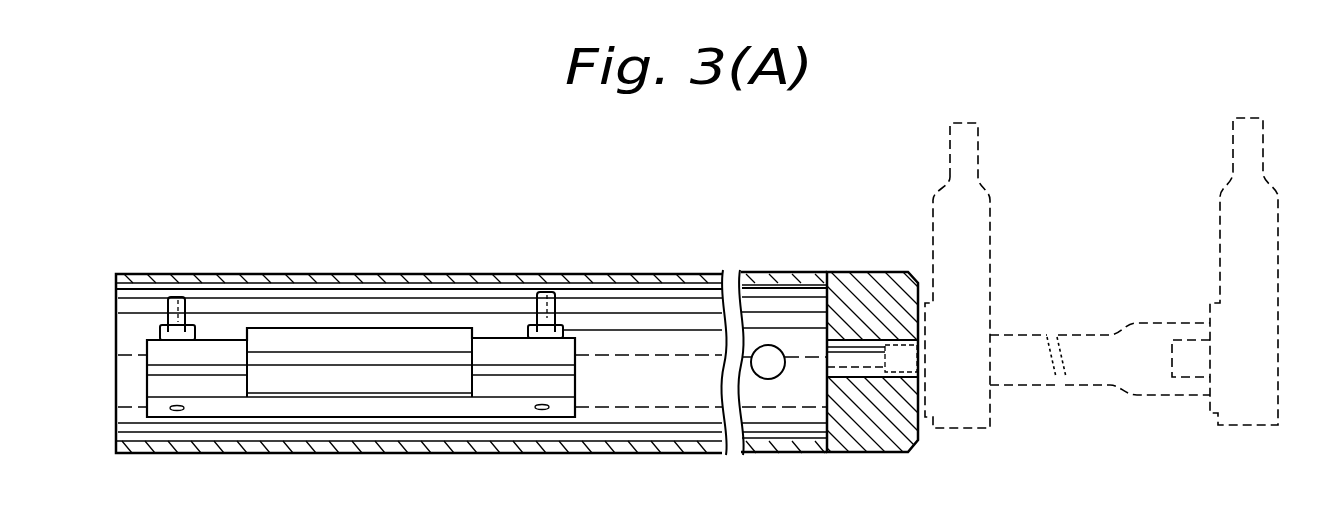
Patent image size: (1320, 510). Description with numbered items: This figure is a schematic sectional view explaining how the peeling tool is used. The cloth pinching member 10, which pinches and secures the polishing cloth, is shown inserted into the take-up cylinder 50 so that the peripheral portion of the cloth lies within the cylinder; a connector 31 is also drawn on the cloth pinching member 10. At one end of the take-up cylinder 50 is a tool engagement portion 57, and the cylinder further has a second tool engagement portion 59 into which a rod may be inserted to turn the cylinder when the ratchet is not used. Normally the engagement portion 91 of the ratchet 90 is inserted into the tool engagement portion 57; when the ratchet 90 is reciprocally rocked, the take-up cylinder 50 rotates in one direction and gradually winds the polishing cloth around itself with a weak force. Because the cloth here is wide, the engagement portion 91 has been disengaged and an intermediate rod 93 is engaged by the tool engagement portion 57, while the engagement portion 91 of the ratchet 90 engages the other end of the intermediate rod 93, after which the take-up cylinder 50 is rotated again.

The cloth pinching member 10 is at (415, 318).
The connector 31 is at (177, 293).
The take-up cylinder 50 is at (658, 268).
The tool engagement portion 57 is at (847, 362).
The second tool engagement portion 59 is at (773, 273).
The ratchet 90 is at (993, 223).
The engagement portion 91 is at (906, 343).
The intermediate rod 93 is at (1078, 340).